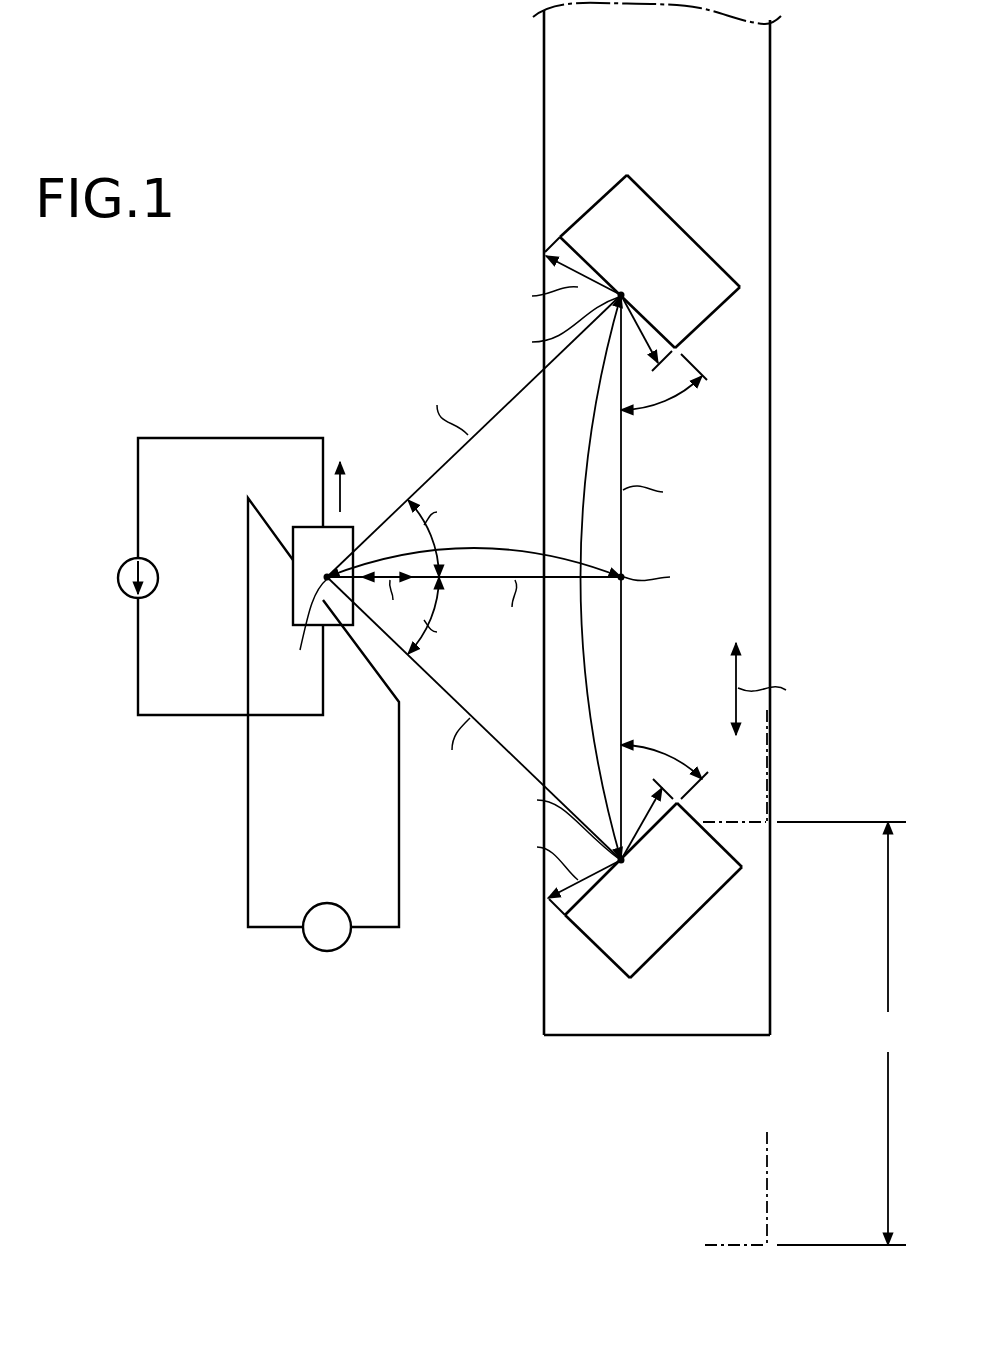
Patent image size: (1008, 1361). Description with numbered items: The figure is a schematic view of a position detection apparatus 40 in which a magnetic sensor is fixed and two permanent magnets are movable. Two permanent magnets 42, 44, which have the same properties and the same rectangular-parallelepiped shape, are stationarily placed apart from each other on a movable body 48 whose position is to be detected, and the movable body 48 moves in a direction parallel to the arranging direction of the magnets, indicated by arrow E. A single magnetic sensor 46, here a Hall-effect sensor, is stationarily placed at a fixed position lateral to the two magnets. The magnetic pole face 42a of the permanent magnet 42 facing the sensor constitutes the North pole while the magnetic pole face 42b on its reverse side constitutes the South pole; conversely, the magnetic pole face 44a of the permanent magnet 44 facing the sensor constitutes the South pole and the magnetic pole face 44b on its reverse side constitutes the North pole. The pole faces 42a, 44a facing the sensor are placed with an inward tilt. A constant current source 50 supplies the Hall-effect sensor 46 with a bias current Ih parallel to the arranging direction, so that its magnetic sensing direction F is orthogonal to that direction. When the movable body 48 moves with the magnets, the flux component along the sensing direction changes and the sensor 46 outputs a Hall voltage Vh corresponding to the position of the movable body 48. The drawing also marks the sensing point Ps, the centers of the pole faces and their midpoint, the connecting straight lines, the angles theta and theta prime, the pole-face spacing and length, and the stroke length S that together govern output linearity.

The position detection apparatus 40 is at (306, 120).
The permanent magnet 42 is at (652, 215).
The magnetic pole face 42a is at (563, 240).
The magnetic pole face 42b is at (728, 272).
The permanent magnet 44 is at (703, 878).
The magnetic pole face 44a is at (563, 910).
The magnetic pole face 44b is at (707, 910).
The magnetic sensor 46 is at (310, 537).
The movable body 48 is at (771, 387).
The constant current source 50 is at (118, 580).